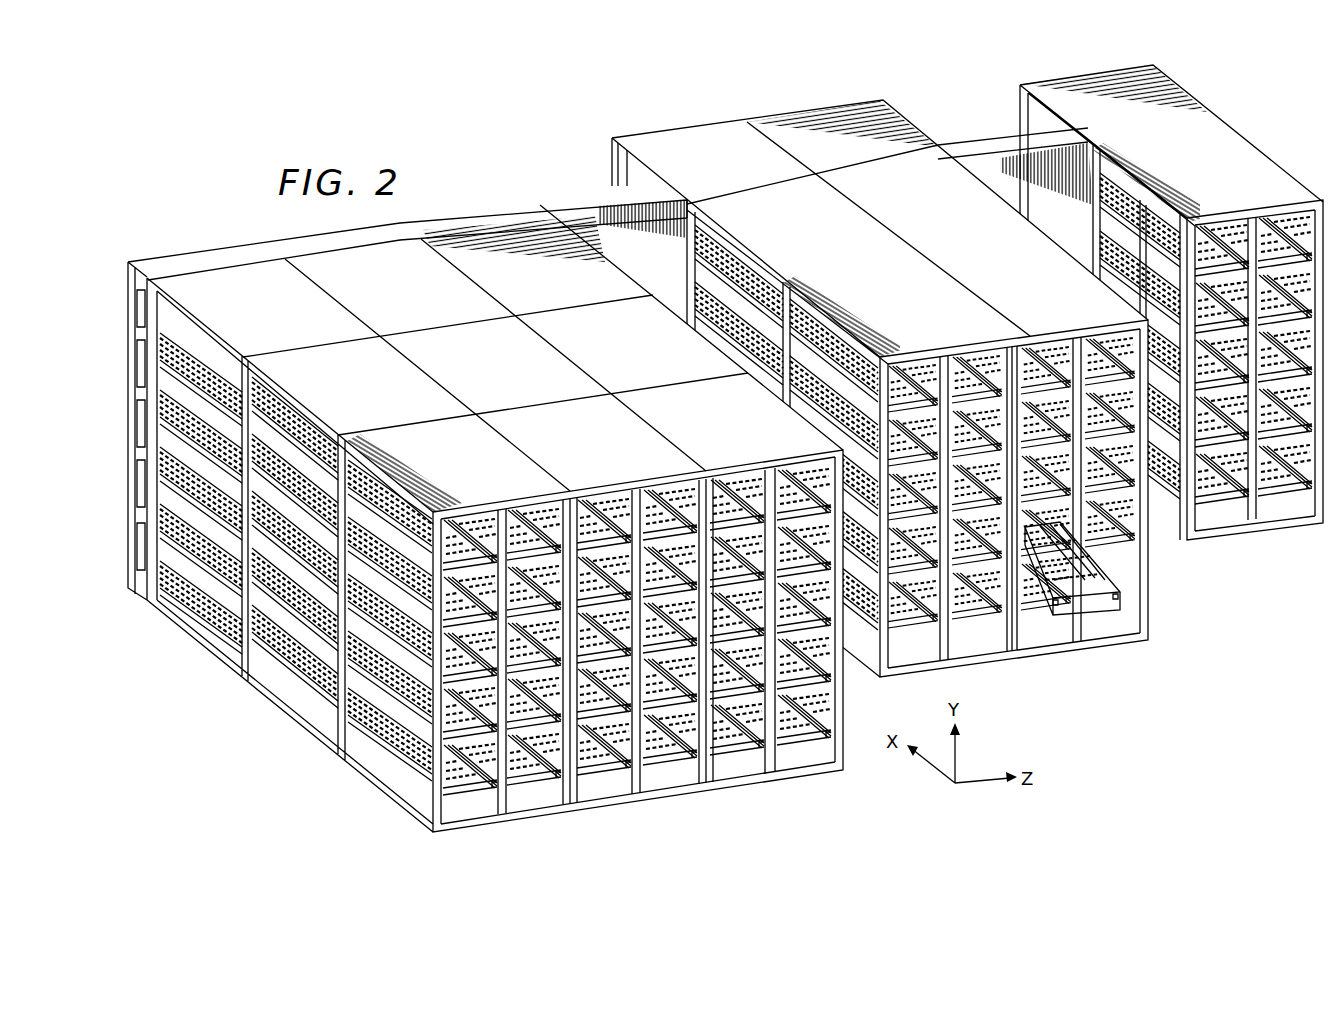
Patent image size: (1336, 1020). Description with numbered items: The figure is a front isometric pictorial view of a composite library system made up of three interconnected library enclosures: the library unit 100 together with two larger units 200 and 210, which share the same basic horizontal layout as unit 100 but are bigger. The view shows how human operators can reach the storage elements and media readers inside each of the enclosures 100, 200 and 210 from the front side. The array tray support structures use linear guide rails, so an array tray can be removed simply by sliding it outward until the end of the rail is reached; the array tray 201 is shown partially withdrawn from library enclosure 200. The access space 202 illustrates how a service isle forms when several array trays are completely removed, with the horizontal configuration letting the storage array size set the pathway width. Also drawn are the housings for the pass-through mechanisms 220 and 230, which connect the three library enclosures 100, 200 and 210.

The library unit 100 is at (1240, 129).
The library unit 200 is at (698, 131).
The array tray 201 is at (1097, 605).
The access space 202 is at (1216, 505).
The library unit 210 is at (292, 717).
The pass-through mechanism housing 220 is at (583, 194).
The pass-through mechanism housing 230 is at (988, 136).